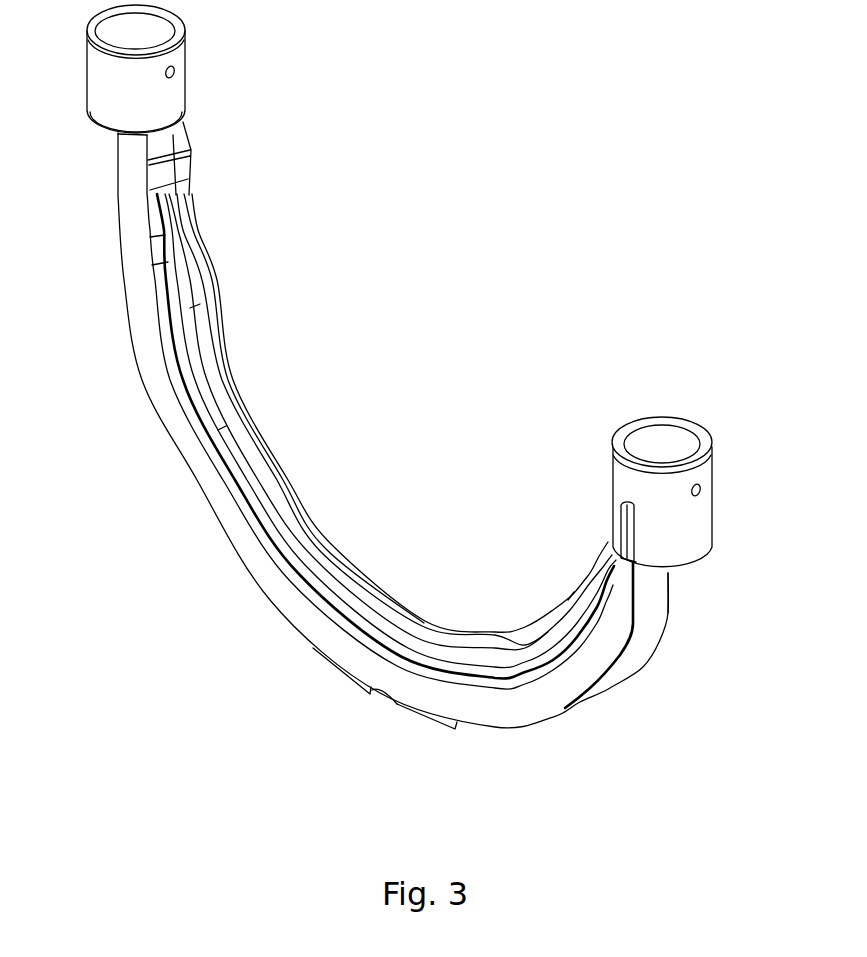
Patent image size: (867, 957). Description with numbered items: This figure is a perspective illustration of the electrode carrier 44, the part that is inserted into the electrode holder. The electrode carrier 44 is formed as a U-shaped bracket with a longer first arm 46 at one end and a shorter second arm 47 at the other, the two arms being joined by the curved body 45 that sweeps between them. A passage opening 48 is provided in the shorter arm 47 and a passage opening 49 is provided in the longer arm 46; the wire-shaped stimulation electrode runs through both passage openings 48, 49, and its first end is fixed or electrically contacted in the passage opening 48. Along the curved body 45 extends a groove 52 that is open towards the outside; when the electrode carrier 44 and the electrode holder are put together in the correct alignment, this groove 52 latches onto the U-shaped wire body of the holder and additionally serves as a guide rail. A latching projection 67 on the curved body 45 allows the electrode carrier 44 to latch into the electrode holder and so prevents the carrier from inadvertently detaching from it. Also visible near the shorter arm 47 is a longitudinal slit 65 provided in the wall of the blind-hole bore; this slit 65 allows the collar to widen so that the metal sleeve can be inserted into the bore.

The electrode carrier 44 is at (413, 409).
The curved body 45 is at (292, 600).
The longer first arm 46 is at (135, 257).
The shorter second arm 47 is at (603, 637).
The passage opening 48 is at (701, 489).
The passage opening 49 is at (176, 70).
The groove 52 is at (648, 608).
The longitudinal slit 65 is at (613, 545).
The latching projection 67 is at (428, 722).